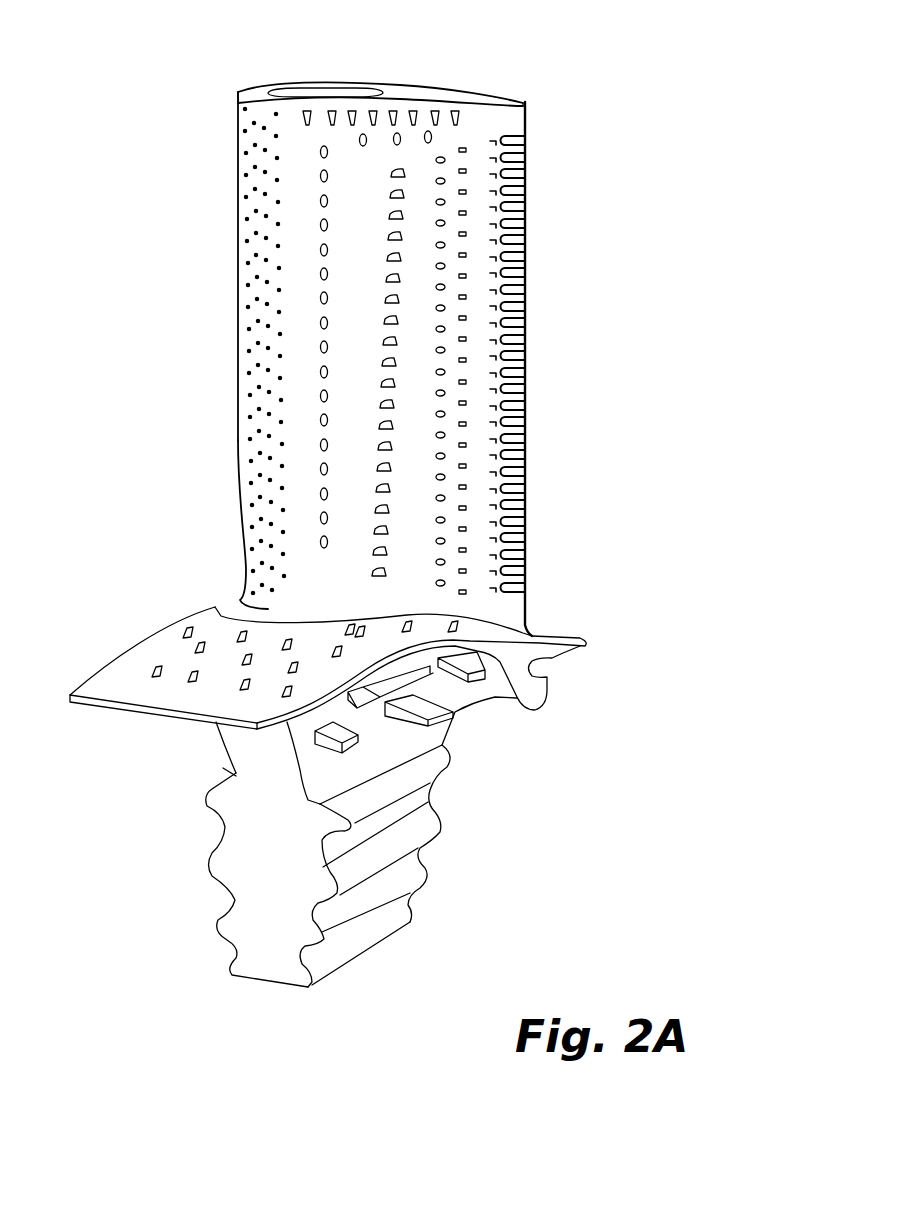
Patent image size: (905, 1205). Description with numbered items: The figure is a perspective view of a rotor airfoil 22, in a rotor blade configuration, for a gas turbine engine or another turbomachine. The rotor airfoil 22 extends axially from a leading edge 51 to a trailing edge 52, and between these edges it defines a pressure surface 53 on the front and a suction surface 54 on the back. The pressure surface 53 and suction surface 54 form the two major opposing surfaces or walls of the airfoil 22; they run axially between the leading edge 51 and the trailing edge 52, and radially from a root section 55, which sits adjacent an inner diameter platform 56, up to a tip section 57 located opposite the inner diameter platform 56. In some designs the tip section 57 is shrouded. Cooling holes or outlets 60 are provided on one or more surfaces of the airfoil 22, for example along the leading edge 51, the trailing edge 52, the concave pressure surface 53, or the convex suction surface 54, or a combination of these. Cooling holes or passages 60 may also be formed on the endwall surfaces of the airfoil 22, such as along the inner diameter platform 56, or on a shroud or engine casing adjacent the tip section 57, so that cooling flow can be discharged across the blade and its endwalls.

The rotor airfoil 22 is at (122, 96).
The leading edge 51 is at (238, 262).
The trailing edge 52 is at (526, 371).
The pressure surface 53 is at (354, 381).
The suction surface 54 is at (466, 89).
The root section 55 is at (266, 607).
The inner diameter platform 56 is at (142, 647).
The tip section 57 is at (410, 100).
The cooling holes 60 is at (325, 197).